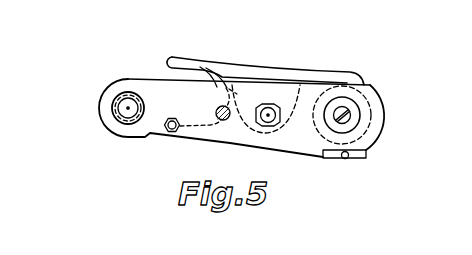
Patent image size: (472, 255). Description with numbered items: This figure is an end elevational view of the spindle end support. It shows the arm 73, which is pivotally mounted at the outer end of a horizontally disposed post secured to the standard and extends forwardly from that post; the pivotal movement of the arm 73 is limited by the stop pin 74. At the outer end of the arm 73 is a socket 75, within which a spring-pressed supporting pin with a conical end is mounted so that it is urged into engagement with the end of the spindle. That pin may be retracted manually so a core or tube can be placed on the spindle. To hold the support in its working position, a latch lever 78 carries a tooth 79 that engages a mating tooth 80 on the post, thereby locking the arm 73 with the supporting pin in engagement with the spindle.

The arm 73 is at (298, 143).
The stop pin 74 is at (350, 157).
The socket 75 is at (121, 125).
The latch lever 78 is at (290, 69).
The tooth 79 is at (375, 92).
The tooth 80 is at (349, 88).